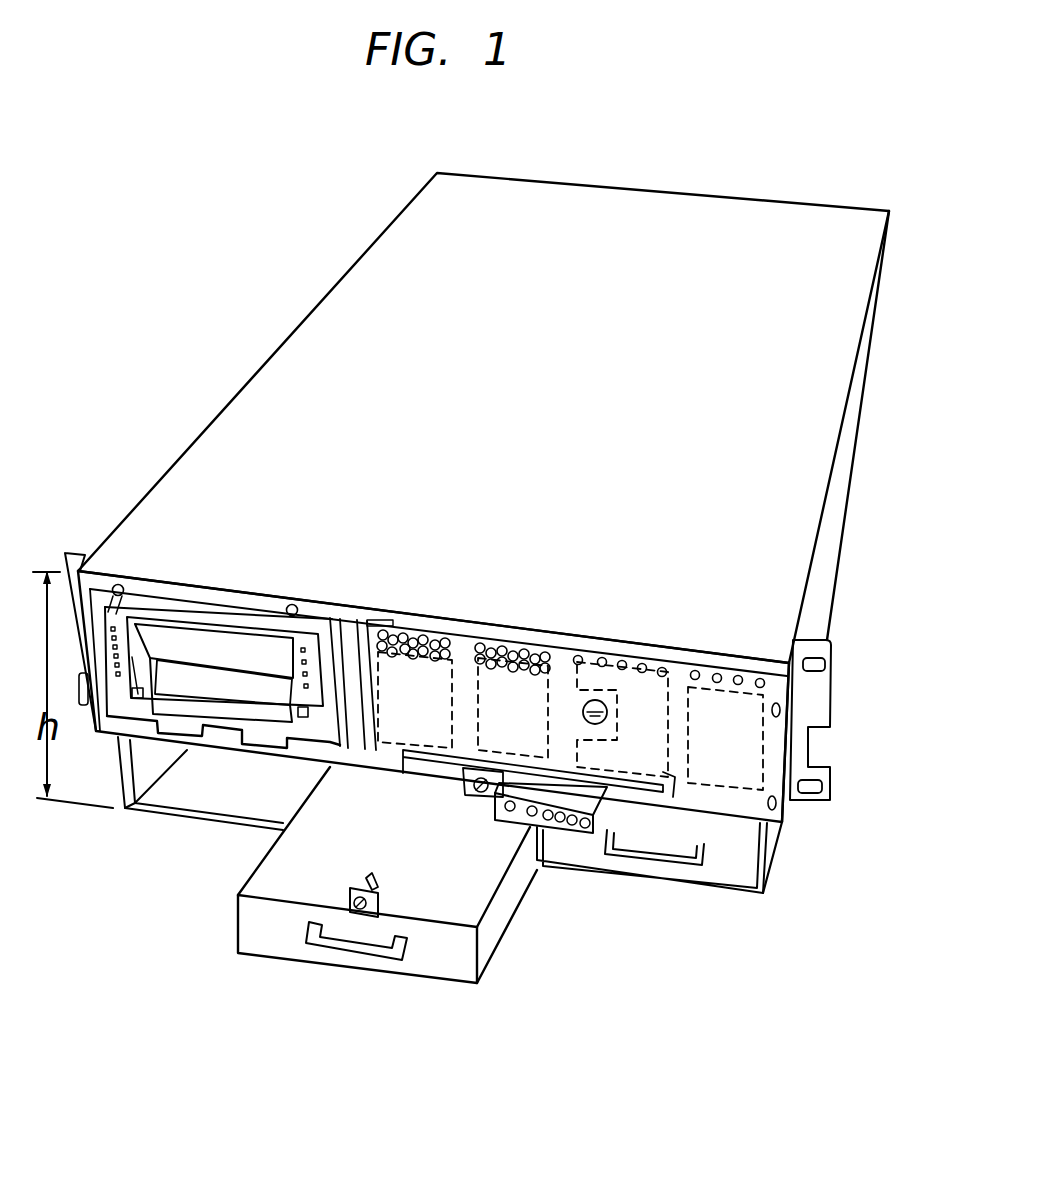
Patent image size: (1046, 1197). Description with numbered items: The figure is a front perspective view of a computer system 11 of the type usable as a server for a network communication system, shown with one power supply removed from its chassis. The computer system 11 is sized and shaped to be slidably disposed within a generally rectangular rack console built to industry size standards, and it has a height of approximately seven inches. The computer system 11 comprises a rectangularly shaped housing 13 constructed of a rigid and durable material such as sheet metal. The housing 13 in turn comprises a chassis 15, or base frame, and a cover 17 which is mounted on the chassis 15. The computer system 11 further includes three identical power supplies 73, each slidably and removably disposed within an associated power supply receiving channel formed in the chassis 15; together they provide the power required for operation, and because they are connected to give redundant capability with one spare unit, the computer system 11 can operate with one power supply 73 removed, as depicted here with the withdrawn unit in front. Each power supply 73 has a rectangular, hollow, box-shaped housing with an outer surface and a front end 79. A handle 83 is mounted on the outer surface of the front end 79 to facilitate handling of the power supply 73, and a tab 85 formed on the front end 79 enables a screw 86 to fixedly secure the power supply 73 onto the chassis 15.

The computer system 11 is at (693, 957).
The housing 13 is at (862, 452).
The chassis 15 is at (825, 577).
The cover 17 is at (318, 358).
The power supply 73 is at (392, 983).
The front end 79 is at (258, 927).
The handle 83 is at (325, 945).
The tab 85 is at (350, 892).
The screw 86 is at (367, 877).